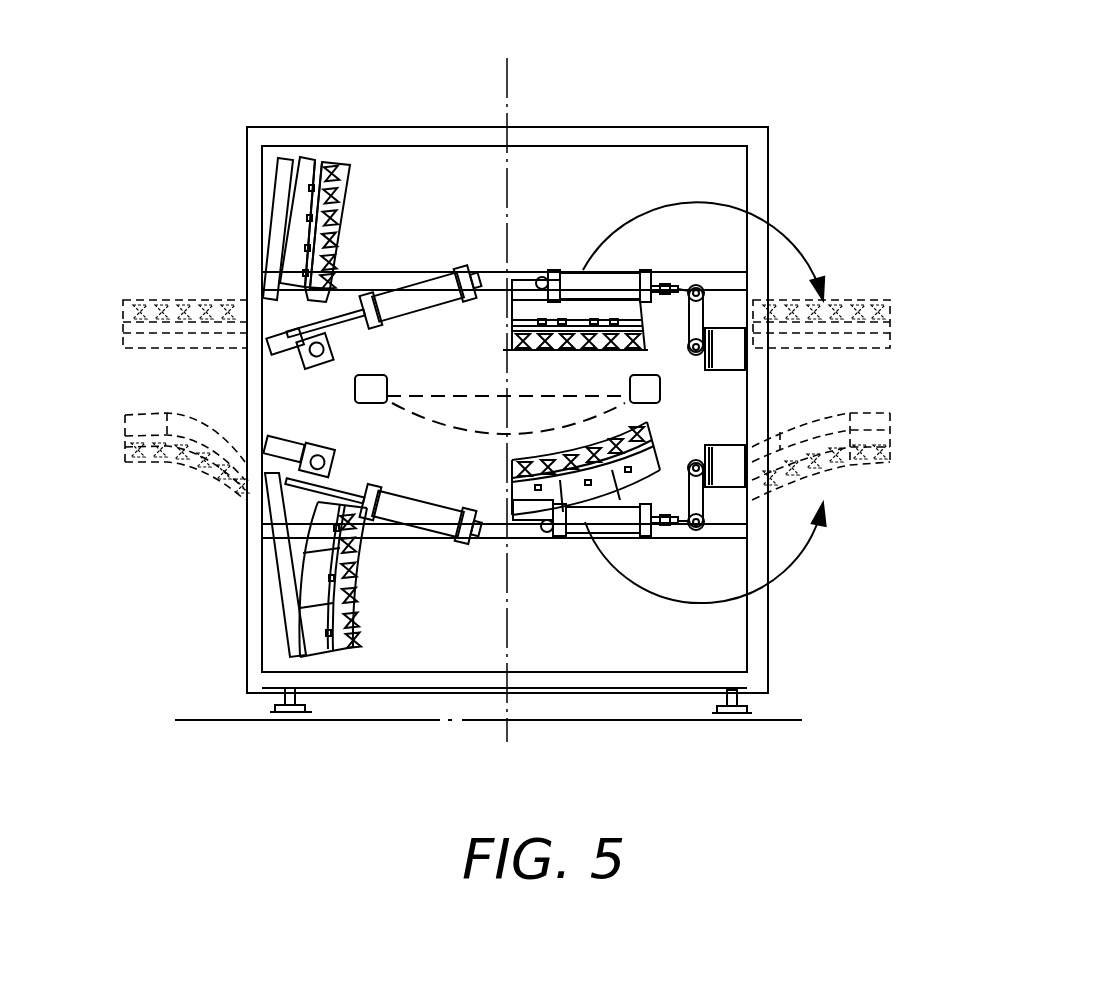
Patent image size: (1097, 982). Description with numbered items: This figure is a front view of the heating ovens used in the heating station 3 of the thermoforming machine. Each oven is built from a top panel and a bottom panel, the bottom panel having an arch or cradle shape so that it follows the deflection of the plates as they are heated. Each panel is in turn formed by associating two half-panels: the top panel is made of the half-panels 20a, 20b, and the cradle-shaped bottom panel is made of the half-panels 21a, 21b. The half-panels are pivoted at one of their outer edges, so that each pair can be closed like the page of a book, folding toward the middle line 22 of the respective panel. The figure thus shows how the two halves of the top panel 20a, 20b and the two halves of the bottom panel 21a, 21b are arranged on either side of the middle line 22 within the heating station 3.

The heating station 3 is at (700, 95).
The middle line 22 is at (512, 93).
The half-panel 20a is at (121, 342).
The half-panel 20b is at (865, 282).
The half-panel 21a is at (141, 474).
The half-panel 21b is at (870, 403).